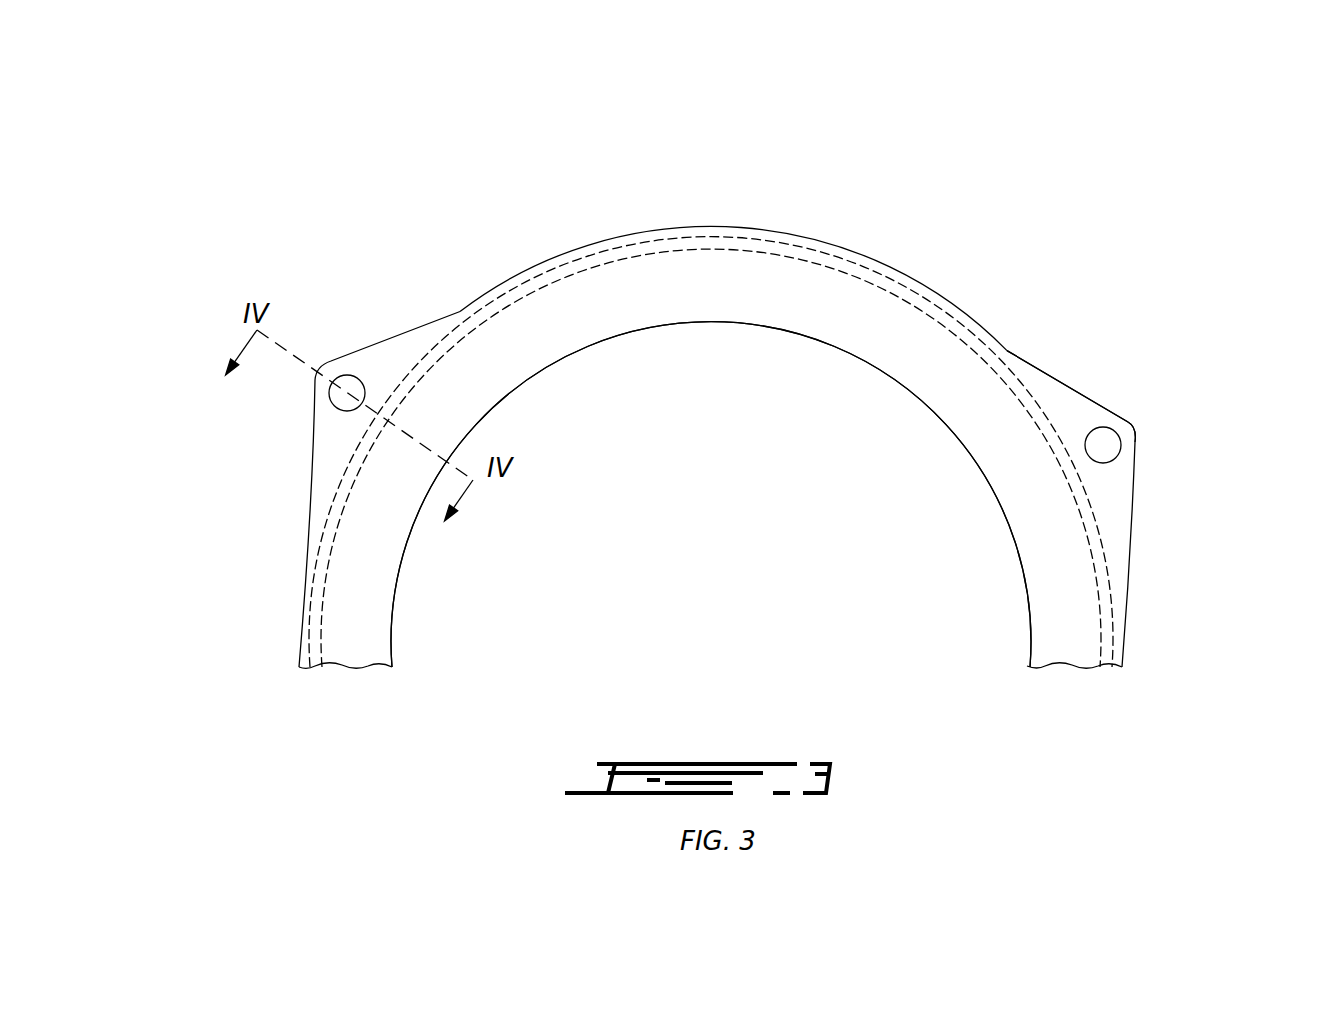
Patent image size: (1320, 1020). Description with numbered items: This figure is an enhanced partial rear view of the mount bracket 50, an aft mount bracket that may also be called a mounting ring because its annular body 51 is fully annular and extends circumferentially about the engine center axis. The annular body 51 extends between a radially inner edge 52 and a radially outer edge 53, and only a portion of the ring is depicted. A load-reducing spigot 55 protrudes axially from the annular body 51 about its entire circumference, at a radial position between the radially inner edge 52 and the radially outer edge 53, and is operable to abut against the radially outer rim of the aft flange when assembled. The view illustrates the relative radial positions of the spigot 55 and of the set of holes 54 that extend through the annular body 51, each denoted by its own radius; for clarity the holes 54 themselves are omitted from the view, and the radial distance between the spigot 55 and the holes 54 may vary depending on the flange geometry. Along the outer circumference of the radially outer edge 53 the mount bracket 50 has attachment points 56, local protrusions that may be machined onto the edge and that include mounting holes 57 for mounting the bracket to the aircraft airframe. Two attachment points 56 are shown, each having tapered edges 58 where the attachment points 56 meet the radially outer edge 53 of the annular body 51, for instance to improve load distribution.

The mount bracket 50 is at (702, 372).
The annular body 51 is at (497, 373).
The radially inner edge 52 is at (713, 320).
The radially outer edge 53 is at (702, 226).
The holes 54 is at (641, 250).
The load-reducing spigot 55 is at (782, 240).
The attachment points 56 is at (315, 403).
The mounting holes 57 is at (350, 376).
The tapered edges 58 is at (1072, 408).